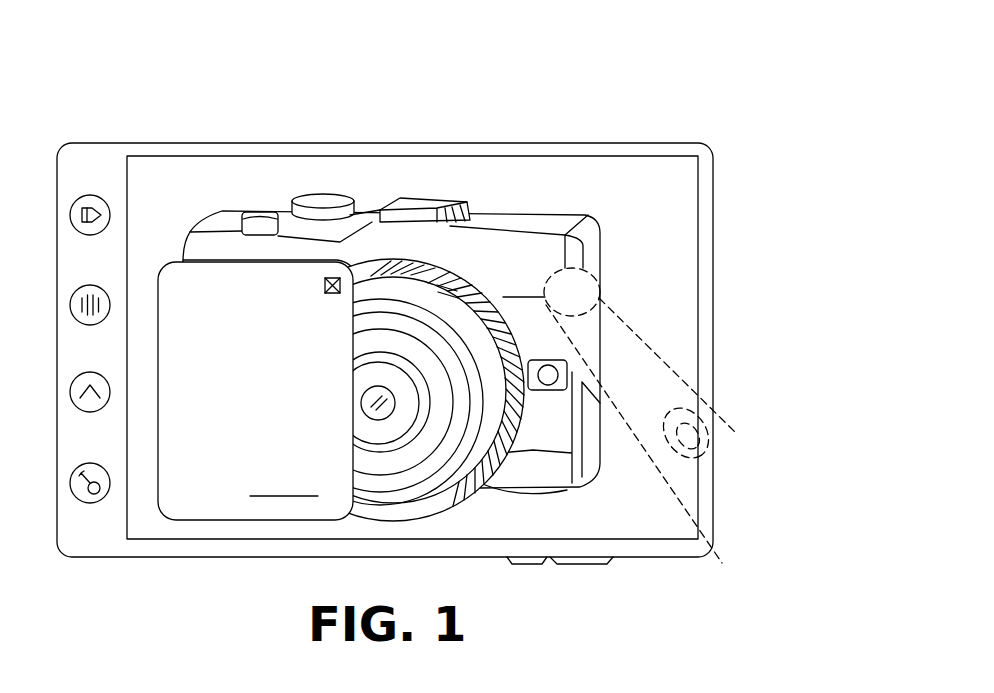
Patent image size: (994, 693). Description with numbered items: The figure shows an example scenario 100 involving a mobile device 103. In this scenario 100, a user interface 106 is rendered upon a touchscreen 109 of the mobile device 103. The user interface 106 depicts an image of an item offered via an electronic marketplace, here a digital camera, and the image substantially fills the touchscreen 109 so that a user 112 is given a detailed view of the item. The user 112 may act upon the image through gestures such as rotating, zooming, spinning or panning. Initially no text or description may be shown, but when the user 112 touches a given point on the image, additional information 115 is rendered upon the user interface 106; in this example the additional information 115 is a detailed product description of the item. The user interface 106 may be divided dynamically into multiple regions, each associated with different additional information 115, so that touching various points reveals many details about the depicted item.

The example scenario 100 is at (607, 78).
The mobile device 103 is at (88, 152).
The user interface 106 is at (485, 247).
The touchscreen 109 is at (220, 157).
The user 112 is at (713, 503).
The additional information 115 is at (237, 507).